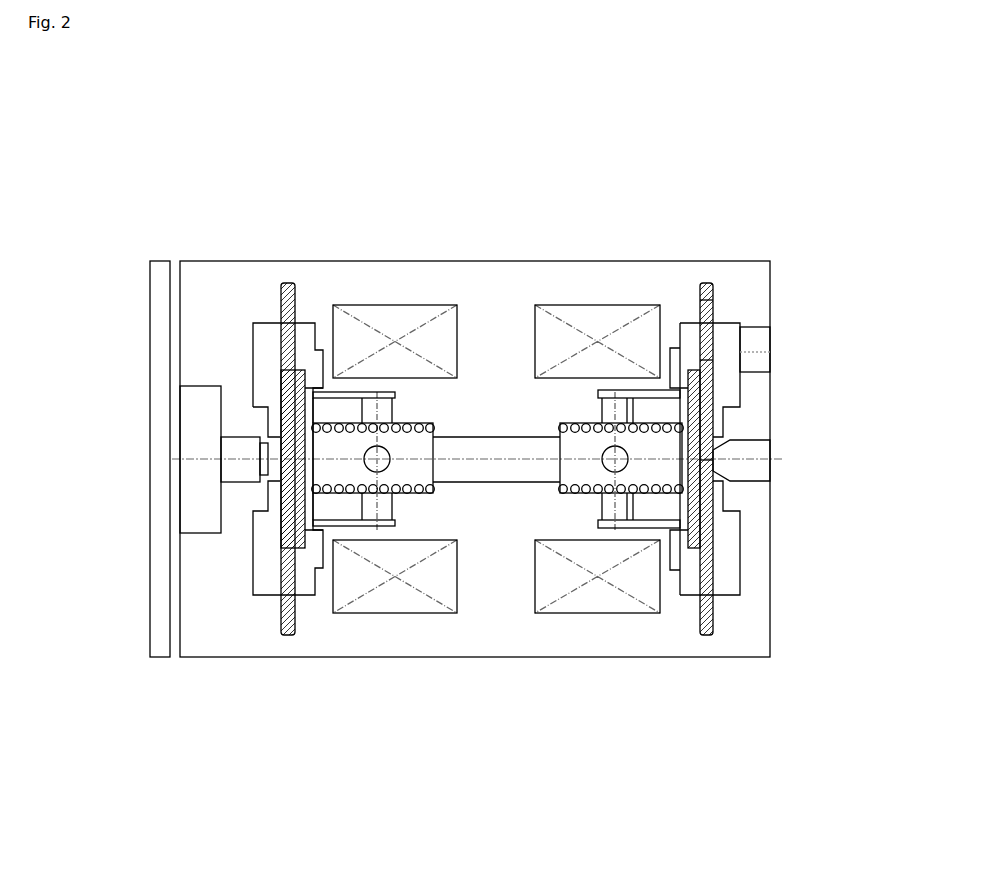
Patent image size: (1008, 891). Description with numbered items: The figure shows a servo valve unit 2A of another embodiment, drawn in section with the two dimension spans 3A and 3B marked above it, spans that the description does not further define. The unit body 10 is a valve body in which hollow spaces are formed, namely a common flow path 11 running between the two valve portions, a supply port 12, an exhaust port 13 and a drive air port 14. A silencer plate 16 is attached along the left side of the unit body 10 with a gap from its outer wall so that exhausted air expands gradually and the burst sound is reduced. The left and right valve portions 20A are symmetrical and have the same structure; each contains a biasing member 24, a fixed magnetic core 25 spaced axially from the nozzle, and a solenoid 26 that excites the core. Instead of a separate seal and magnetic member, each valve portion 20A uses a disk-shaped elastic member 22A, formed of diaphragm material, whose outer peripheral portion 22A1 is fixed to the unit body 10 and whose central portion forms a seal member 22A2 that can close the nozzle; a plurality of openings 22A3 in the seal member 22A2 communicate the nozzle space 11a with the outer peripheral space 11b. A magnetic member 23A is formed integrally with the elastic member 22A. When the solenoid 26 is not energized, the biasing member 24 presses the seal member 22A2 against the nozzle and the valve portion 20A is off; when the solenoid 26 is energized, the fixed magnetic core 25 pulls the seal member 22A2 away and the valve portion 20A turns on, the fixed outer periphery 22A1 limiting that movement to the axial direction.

The servo valve unit 2A is at (443, 212).
The first region 3A is at (772, 112).
The second region 3B is at (495, 79).
The unit body 10 is at (348, 262).
The common flow path 11 is at (483, 470).
The nozzle space 11a is at (725, 390).
The outer peripheral space 11b is at (688, 338).
The supply port 12 is at (752, 472).
The exhaust port 13 is at (238, 472).
The drive air port 14 is at (757, 342).
The silencer plate 16 is at (158, 287).
The valve portion 20A is at (336, 623).
The disk-shaped elastic member 22A is at (713, 552).
The outer peripheral portion 22A1 is at (713, 332).
The seal member 22A2 is at (713, 452).
The opening 22A3 is at (722, 345).
The magnetic member 23A is at (688, 548).
The biasing member 24 is at (616, 522).
The fixed magnetic core 25 is at (647, 513).
The solenoid 26 is at (606, 320).